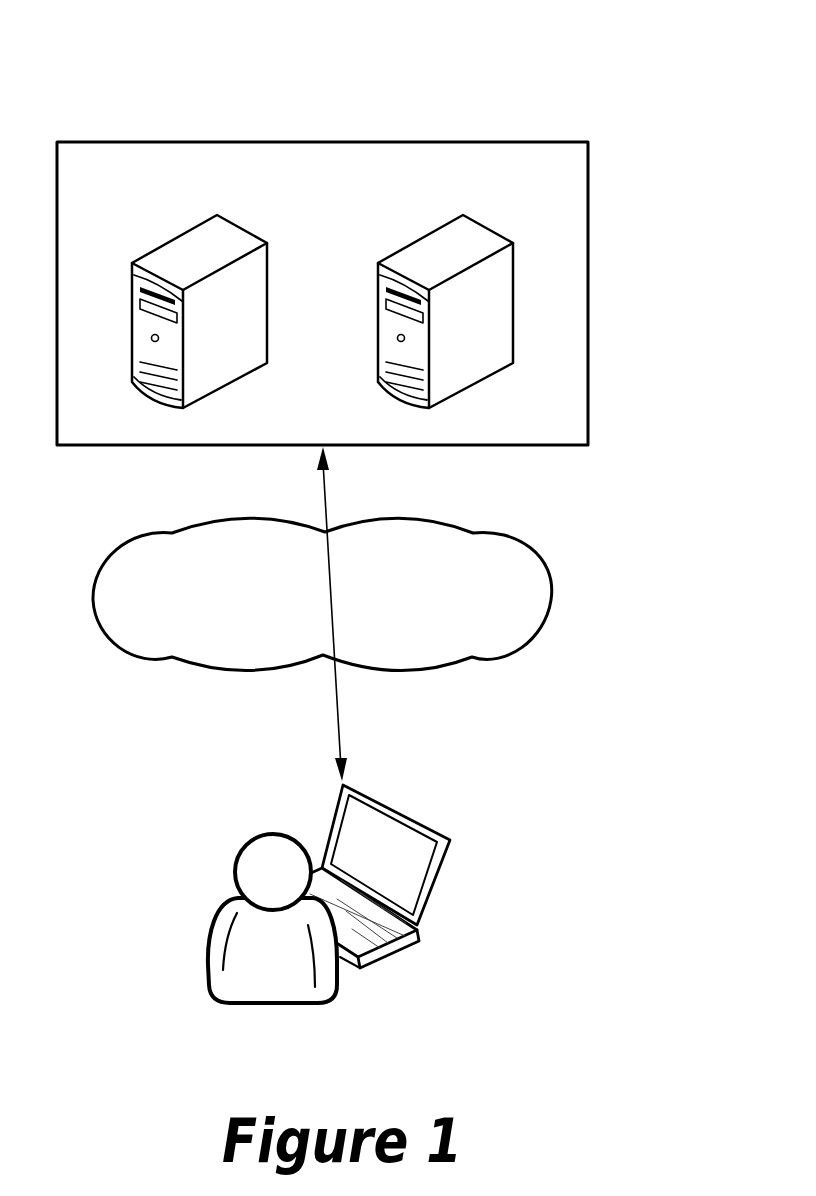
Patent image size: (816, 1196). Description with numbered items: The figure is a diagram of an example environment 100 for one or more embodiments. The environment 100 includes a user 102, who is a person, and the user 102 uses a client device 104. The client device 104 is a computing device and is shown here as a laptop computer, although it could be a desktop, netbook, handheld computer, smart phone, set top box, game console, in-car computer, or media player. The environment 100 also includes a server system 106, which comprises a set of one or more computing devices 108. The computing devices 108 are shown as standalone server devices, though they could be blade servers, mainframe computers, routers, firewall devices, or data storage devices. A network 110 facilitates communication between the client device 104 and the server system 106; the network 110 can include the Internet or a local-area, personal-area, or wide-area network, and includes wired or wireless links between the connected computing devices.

The environment 100 is at (632, 62).
The user 102 is at (225, 920).
The client device 104 is at (395, 812).
The server system 106 is at (473, 141).
The computing devices 108 is at (252, 233).
The network 110 is at (512, 558).